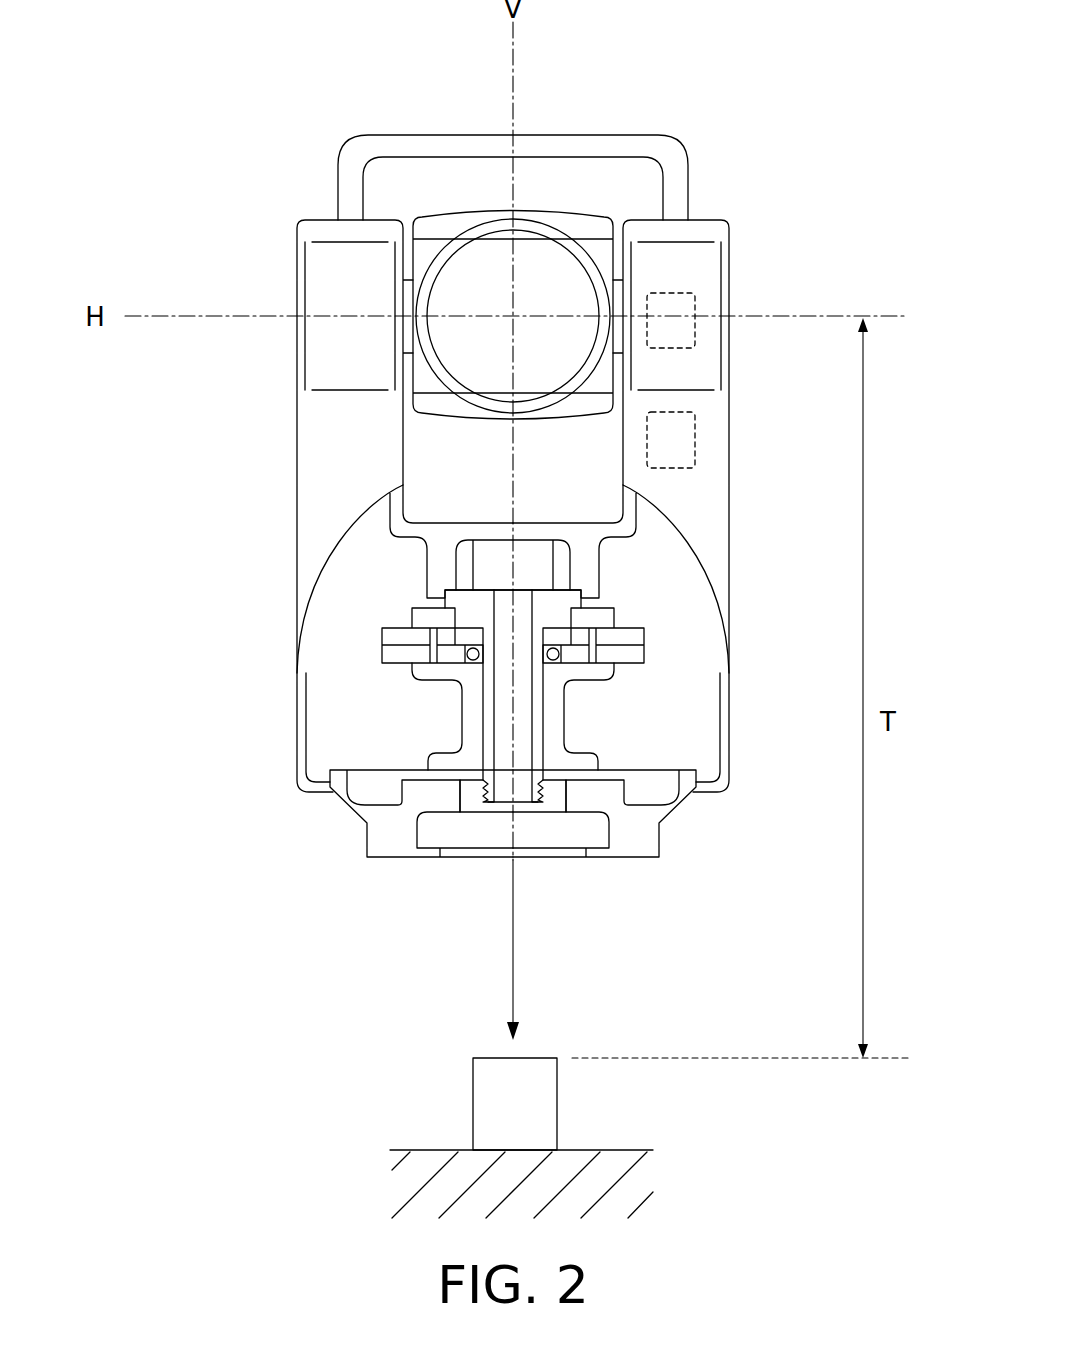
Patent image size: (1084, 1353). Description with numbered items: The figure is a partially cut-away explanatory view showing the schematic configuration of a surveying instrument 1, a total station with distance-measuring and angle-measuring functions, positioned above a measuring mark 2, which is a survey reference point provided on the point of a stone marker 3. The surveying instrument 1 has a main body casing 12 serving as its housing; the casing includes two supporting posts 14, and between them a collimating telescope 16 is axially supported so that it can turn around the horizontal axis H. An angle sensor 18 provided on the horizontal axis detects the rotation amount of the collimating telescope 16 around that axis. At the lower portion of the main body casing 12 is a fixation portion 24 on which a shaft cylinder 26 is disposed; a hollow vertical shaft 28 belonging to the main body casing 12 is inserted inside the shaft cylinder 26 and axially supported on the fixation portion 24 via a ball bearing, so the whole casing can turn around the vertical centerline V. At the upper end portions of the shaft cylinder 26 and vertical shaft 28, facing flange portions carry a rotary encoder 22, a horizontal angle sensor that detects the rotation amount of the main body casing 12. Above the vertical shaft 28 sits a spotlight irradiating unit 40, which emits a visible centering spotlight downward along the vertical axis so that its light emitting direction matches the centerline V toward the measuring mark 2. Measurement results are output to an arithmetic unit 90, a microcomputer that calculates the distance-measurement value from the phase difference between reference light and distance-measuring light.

The surveying instrument 1 is at (262, 133).
The measuring mark 2 is at (480, 1057).
The stone marker 3 is at (485, 1093).
The main body casing 12 is at (717, 567).
The supporting posts 14 is at (713, 233).
The collimating telescope 16 is at (445, 222).
The angle sensor 18 is at (695, 305).
The rotary encoder 22 is at (372, 647).
The fixation portion 24 is at (352, 803).
The shaft cylinder 26 is at (472, 722).
The vertical shaft 28 is at (487, 694).
The spotlight irradiating unit 40 is at (537, 570).
The arithmetic unit 90 is at (695, 427).